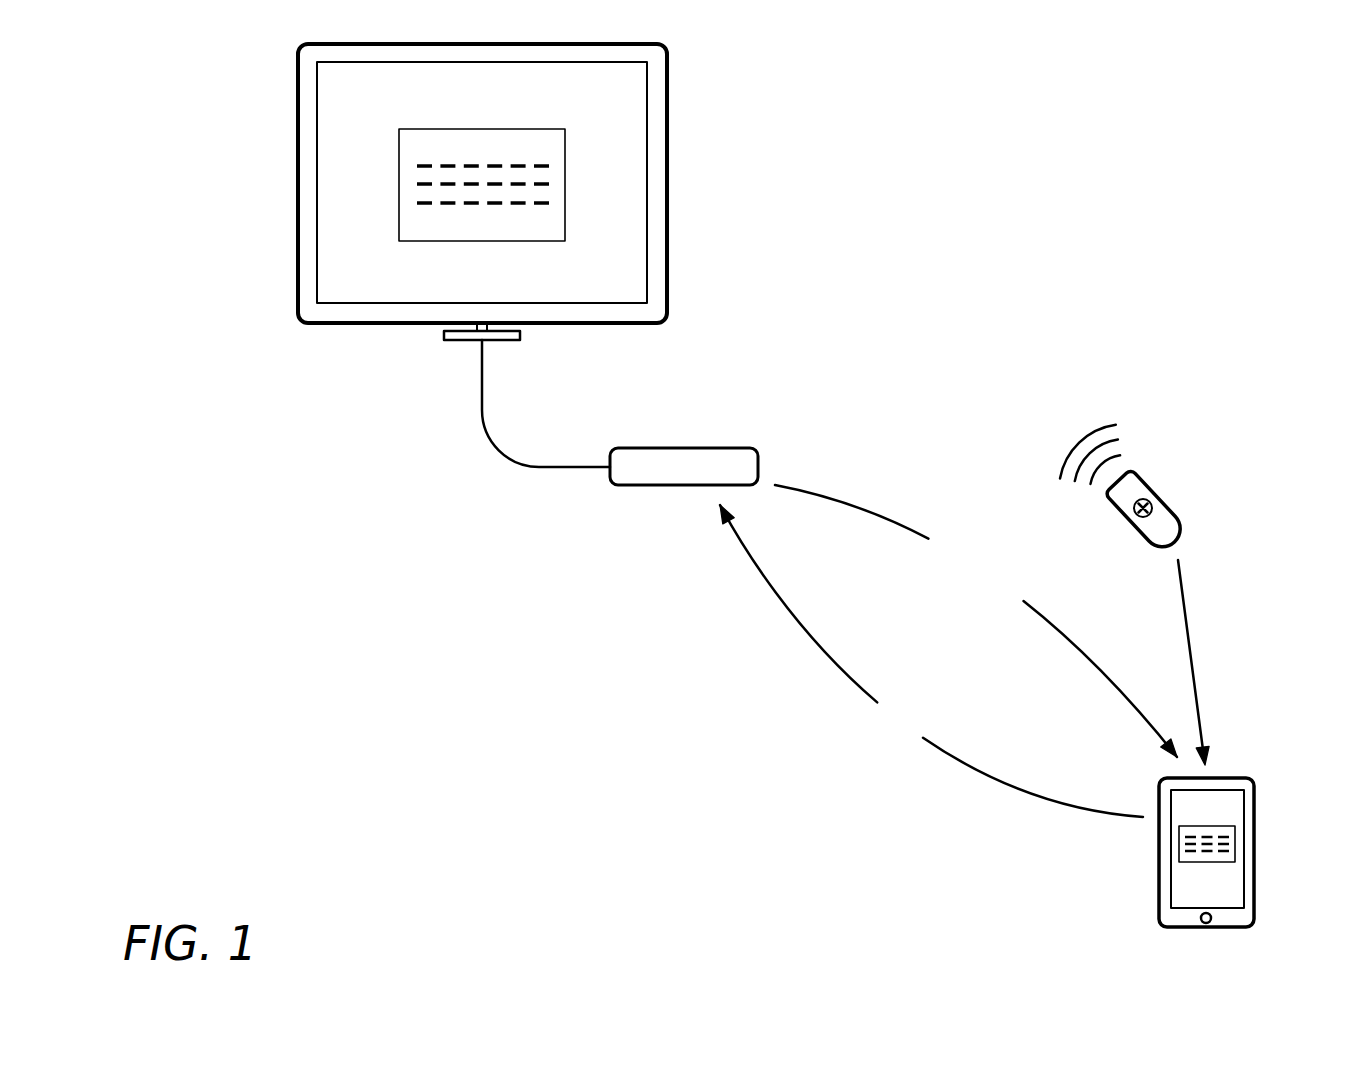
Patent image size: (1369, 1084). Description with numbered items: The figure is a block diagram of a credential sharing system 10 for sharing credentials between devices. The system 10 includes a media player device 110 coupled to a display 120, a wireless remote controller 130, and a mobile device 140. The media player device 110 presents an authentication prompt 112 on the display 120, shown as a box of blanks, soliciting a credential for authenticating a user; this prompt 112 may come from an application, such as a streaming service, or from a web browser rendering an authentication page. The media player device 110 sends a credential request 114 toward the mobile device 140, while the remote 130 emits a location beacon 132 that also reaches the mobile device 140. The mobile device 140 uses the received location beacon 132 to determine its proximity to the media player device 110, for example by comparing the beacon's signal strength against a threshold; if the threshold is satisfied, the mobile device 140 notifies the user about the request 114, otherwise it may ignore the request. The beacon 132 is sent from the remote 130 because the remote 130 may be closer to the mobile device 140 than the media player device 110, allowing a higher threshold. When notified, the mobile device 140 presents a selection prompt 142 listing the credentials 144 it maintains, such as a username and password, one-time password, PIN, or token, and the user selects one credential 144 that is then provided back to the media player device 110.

The credential sharing system 10 is at (1150, 188).
The media player device 110 is at (651, 487).
The authentication prompt 112 is at (563, 172).
The credential request 114 is at (918, 530).
The display 120 is at (666, 252).
The wireless remote controller 130 is at (1181, 521).
The location beacon 132 is at (1196, 680).
The mobile device 140 is at (1255, 880).
The selection prompt 142 is at (1231, 833).
The credential 144 is at (1027, 793).